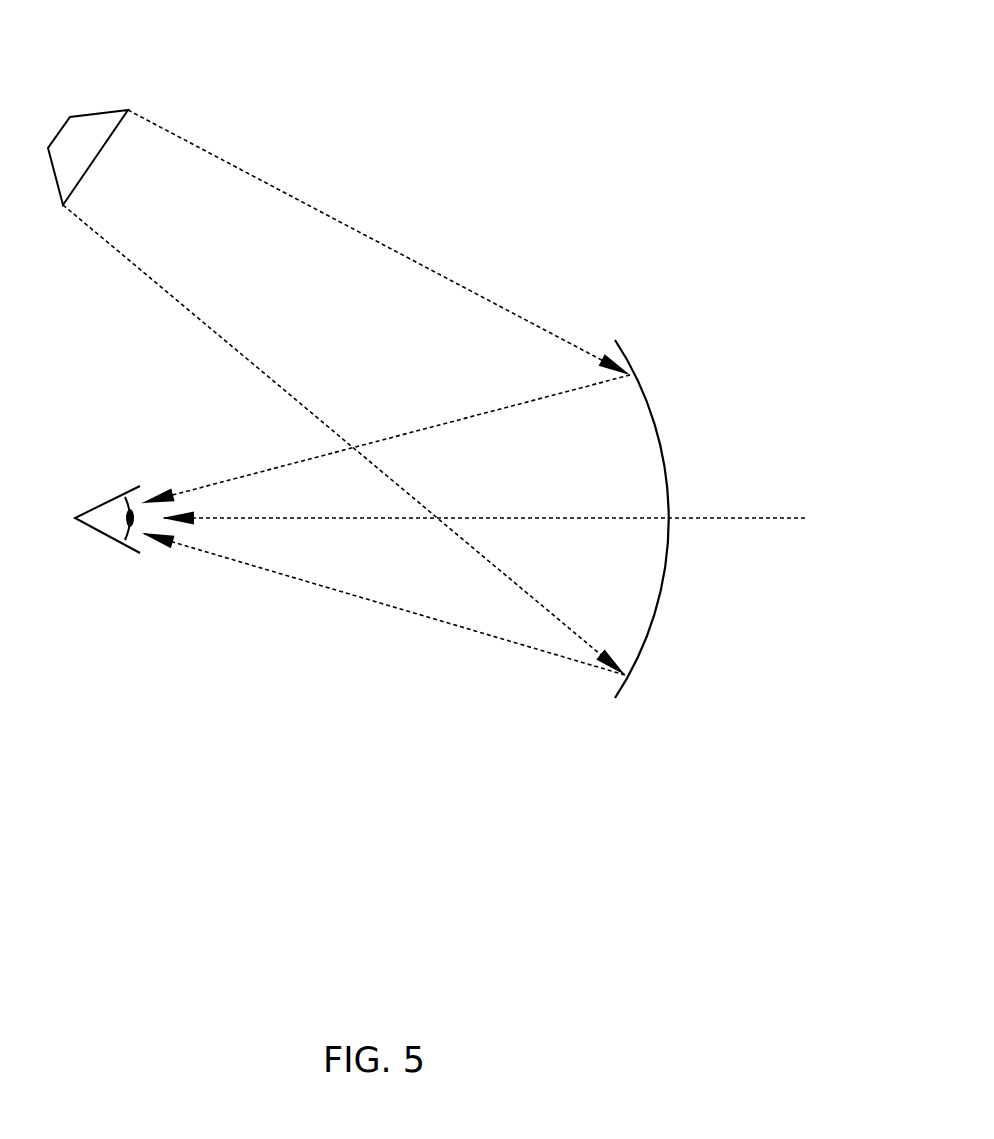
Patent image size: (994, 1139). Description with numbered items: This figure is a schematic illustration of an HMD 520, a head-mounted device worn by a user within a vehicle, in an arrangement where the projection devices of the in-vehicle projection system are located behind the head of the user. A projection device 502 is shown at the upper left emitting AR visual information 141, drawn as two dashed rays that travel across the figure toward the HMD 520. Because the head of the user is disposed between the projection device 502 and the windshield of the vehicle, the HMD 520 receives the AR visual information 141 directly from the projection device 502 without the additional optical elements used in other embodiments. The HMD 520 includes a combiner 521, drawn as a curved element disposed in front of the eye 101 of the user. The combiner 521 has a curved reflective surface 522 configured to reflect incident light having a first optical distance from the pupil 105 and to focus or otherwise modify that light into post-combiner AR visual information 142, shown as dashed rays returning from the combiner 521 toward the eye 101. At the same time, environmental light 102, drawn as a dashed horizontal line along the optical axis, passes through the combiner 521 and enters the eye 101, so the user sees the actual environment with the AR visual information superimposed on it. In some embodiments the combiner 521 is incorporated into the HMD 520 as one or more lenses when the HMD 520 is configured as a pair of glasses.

The HMD 520 is at (759, 82).
The projection device 502 is at (112, 110).
The AR visual information 141 is at (363, 235).
The post-combiner AR visual information 142 is at (240, 477).
The environmental light 102 is at (702, 517).
The combiner 521 is at (650, 422).
The curved reflective surface 522 is at (653, 467).
The eye 101 is at (105, 485).
The pupil 105 is at (133, 520).